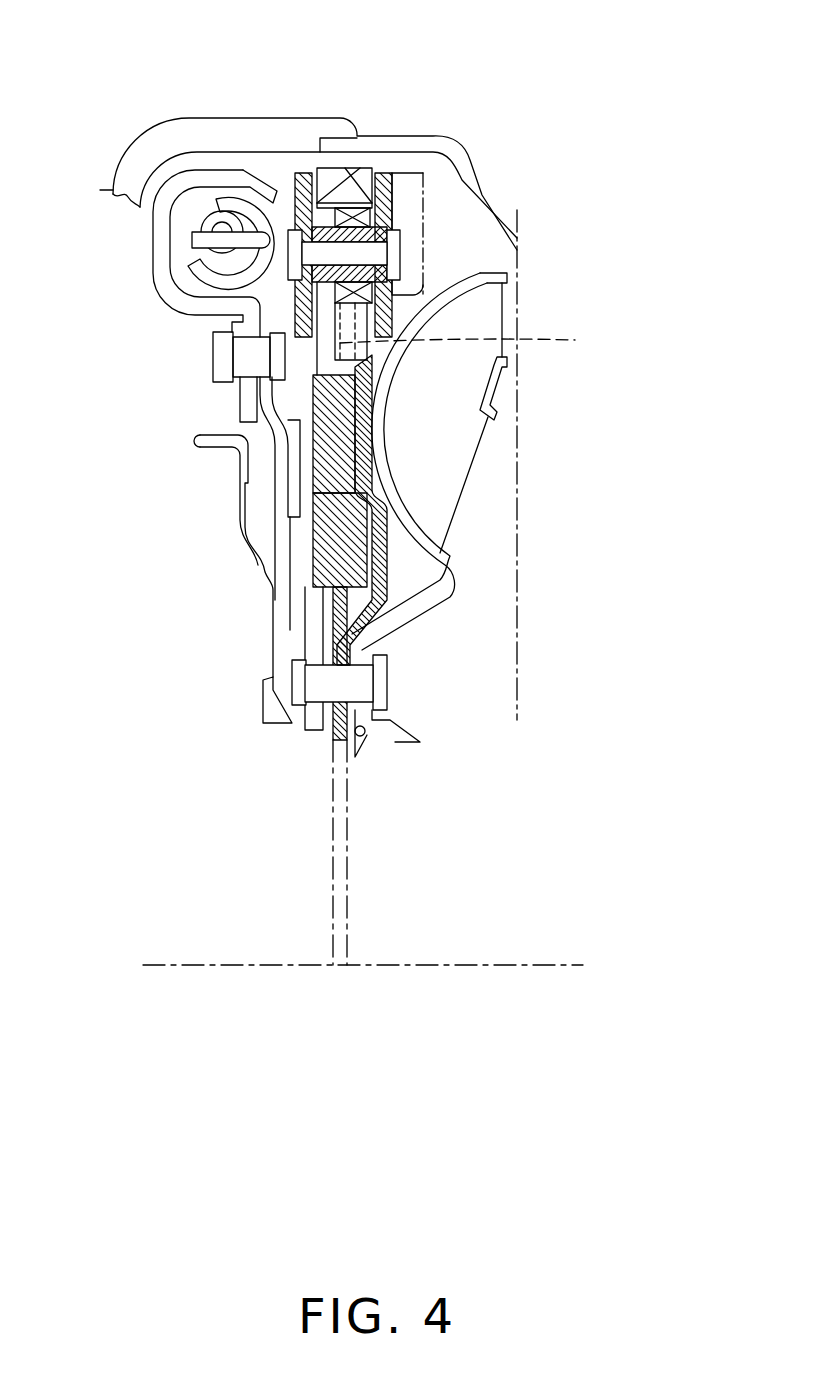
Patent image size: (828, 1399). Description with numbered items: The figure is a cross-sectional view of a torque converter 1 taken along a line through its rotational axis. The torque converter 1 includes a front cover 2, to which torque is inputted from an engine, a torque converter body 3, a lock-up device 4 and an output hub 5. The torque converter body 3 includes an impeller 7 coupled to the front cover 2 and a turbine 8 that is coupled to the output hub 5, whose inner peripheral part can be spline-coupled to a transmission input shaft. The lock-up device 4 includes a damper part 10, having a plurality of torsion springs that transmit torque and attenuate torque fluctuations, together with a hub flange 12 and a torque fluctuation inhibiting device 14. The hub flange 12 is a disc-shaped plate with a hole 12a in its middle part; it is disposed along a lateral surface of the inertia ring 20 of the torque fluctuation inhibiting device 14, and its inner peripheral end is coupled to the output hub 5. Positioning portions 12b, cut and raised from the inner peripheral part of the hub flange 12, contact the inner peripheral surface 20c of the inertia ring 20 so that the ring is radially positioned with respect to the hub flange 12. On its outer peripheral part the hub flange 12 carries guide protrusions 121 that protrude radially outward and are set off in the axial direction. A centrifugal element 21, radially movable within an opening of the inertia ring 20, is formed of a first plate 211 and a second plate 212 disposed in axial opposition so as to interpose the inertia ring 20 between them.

The torque converter 1 is at (470, 84).
The front cover 2 is at (142, 152).
The torque converter body 3 is at (530, 215).
The lock-up device 4 is at (185, 399).
The output hub 5 is at (375, 732).
The impeller 7 is at (519, 250).
The turbine 8 is at (455, 457).
The damper part 10 is at (158, 300).
The hub flange 12 is at (445, 577).
The hole 12a is at (340, 744).
The positioning portion 12b is at (335, 592).
The torque fluctuation inhibiting device 14 is at (385, 162).
The inertia ring 20 is at (320, 474).
The inner peripheral surface 20c is at (300, 630).
The centrifugal element 21 is at (287, 165).
The guide protrusion 121 is at (525, 341).
The first plate 211 is at (383, 185).
The second plate 212 is at (302, 175).